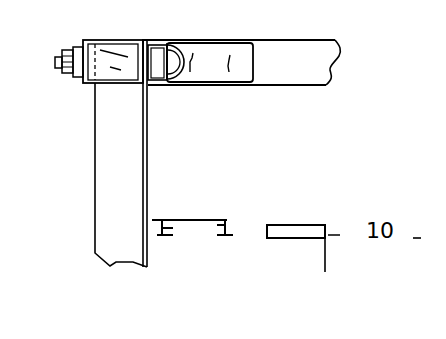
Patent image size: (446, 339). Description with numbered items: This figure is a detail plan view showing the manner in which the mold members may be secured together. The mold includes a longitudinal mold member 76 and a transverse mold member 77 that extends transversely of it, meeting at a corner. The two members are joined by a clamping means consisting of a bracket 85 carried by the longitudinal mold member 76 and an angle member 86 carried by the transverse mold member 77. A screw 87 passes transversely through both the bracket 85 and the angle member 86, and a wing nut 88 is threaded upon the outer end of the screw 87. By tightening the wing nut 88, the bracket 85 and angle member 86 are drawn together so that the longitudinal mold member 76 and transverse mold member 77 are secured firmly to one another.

The longitudinal mold member 76 is at (149, 183).
The transverse mold member 77 is at (296, 94).
The bracket 85 is at (107, 50).
The angle member 86 is at (203, 53).
The screw 87 is at (155, 52).
The wing nut 88 is at (68, 77).